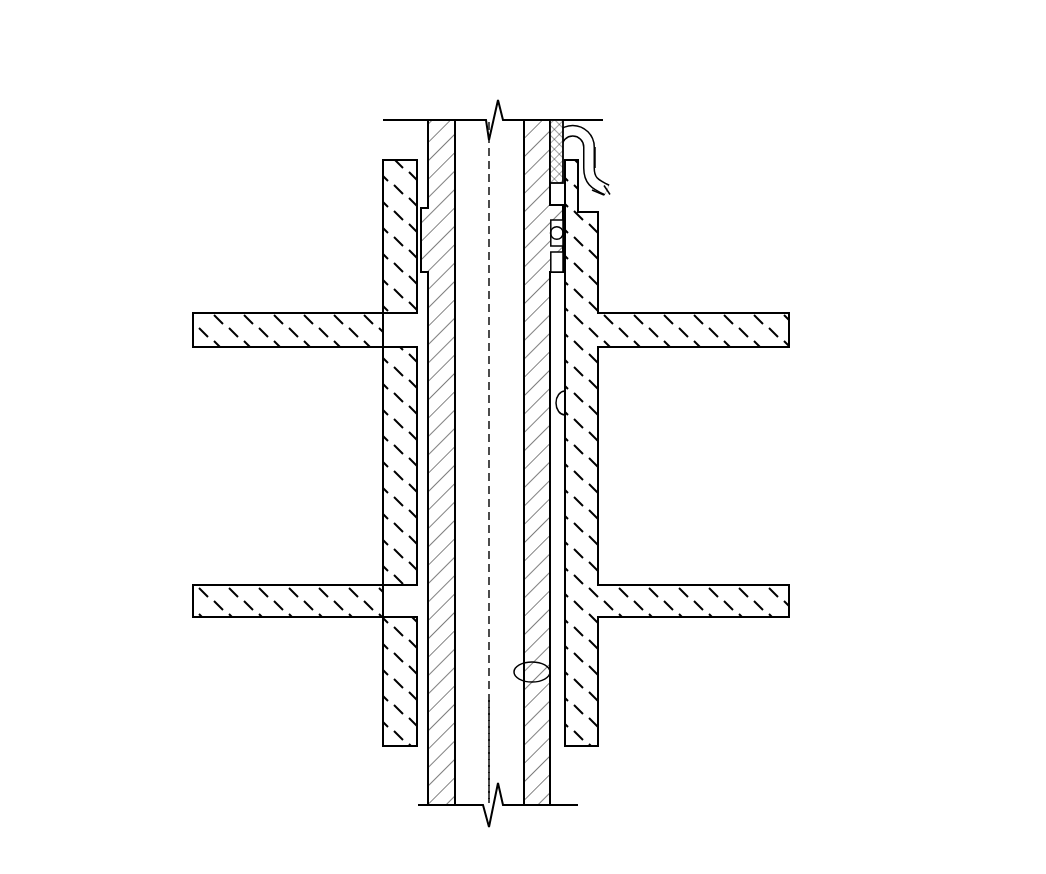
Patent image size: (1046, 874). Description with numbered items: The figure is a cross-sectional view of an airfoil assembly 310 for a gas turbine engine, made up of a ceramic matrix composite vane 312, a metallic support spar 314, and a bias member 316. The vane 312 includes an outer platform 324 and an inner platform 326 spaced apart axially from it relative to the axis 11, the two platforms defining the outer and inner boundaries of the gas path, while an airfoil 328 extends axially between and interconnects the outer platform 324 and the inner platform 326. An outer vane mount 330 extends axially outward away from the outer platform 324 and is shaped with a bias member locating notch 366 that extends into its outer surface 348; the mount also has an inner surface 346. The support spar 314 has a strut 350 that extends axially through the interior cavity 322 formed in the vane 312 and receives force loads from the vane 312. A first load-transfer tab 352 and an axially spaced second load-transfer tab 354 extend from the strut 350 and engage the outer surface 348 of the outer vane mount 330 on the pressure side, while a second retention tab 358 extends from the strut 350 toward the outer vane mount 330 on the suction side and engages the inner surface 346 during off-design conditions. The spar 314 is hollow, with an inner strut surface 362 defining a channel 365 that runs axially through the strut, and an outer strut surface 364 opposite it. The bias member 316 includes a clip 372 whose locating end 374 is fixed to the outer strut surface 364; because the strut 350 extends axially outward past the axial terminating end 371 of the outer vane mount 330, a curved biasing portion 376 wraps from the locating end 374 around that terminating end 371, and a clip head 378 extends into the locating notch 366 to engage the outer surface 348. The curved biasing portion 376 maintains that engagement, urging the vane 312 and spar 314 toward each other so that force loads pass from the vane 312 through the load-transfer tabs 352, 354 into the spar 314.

The airfoil assembly 310 is at (163, 145).
The ceramic matrix composite vane 312 is at (818, 400).
The metallic support spar 314 is at (440, 113).
The bias member 316 is at (655, 138).
The interior cavity 322 is at (425, 745).
The outer platform 324 is at (790, 328).
The inner platform 326 is at (790, 593).
The airfoil 328 is at (608, 483).
The outer vane mount 330 is at (372, 278).
The inner surface 346 is at (567, 407).
The outer surface 348 is at (598, 390).
The strut 350 is at (423, 433).
The first load-transfer tab 352 is at (542, 202).
The second load-transfer tab 354 is at (567, 262).
The second retention tab 358 is at (417, 242).
The inner strut surface 362 is at (550, 676).
The outer strut surface 364 is at (552, 665).
The channel 365 is at (473, 748).
The bias member locating notch 366 is at (597, 205).
The axial terminating end 371 is at (575, 150).
The clip 372 is at (635, 130).
The locating end 374 is at (538, 150).
The curved biasing portion 376 is at (578, 120).
The clip head 378 is at (608, 183).
The axis 11 is at (490, 760).